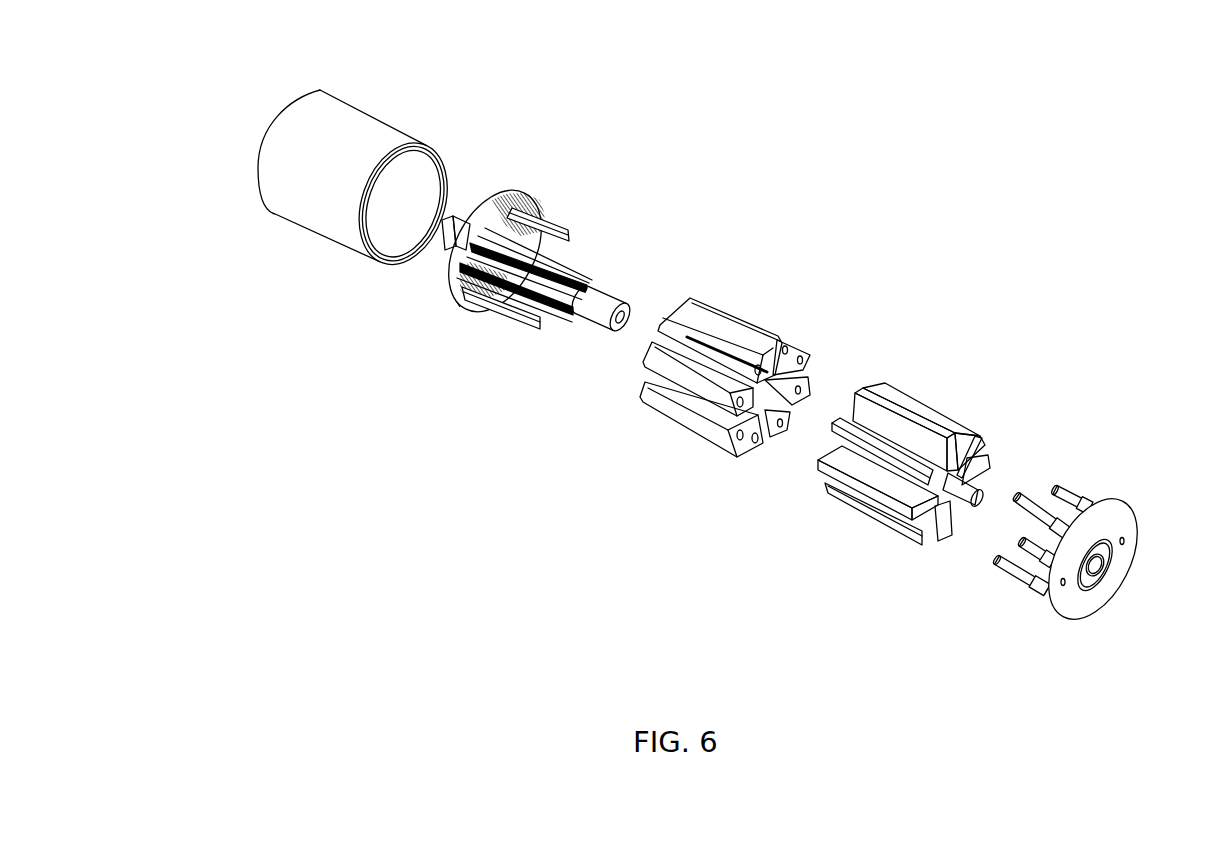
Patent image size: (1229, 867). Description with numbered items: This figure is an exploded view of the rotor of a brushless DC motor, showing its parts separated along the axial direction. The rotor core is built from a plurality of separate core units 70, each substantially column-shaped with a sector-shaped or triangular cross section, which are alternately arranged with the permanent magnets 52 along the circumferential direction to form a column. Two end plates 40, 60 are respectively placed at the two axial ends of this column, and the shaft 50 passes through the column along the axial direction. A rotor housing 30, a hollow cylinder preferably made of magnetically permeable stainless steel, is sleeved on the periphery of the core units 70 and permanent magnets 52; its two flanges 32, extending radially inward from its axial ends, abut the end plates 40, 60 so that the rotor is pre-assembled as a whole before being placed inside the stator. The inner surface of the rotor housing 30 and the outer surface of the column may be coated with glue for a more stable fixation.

The rotor housing 30 is at (317, 133).
The flange 32 is at (394, 266).
The end plate 40 is at (488, 213).
The shaft 50 is at (602, 305).
The core unit 70 is at (718, 342).
The permanent magnet 52 is at (908, 435).
The end plate 60 is at (1112, 515).